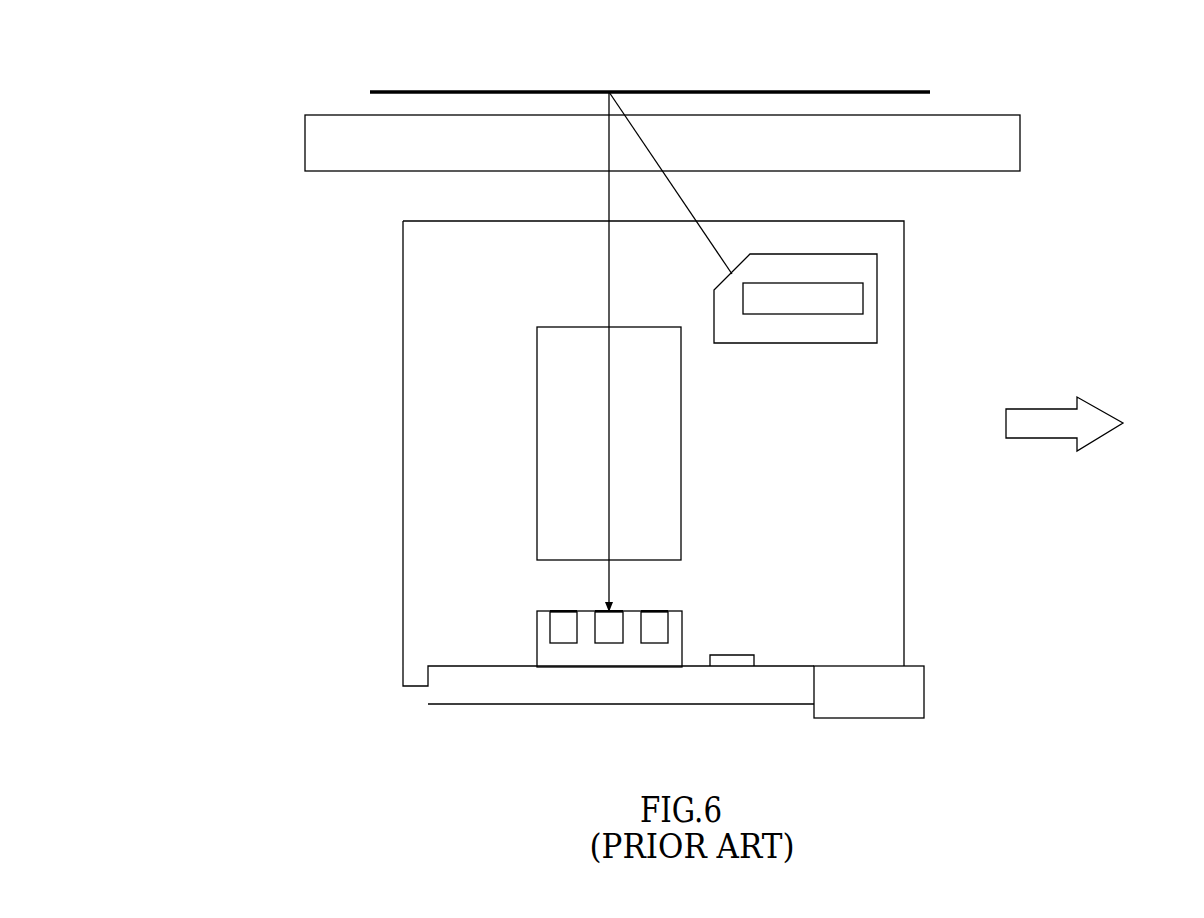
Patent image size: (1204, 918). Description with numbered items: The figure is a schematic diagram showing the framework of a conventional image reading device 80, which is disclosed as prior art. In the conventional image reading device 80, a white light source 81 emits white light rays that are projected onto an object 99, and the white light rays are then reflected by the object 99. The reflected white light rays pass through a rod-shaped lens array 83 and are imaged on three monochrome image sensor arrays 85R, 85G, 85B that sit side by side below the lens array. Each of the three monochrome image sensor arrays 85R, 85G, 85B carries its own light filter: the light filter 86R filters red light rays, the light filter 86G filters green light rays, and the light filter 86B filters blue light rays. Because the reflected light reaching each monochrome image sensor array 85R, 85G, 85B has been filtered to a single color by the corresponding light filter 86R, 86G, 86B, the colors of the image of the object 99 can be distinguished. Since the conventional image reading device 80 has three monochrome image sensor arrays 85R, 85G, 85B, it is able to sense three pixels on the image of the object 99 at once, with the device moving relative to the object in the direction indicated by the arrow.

The object 99 is at (878, 92).
The conventional image reading device 80 is at (335, 641).
The white light source 81 is at (844, 283).
The rod-shaped lens array 83 is at (537, 444).
The monochrome image sensor array 85R is at (565, 643).
The monochrome image sensor array 85G is at (608, 643).
The monochrome image sensor array 85B is at (655, 643).
The light filter 86R is at (562, 610).
The light filter 86G is at (605, 611).
The light filter 86B is at (653, 611).